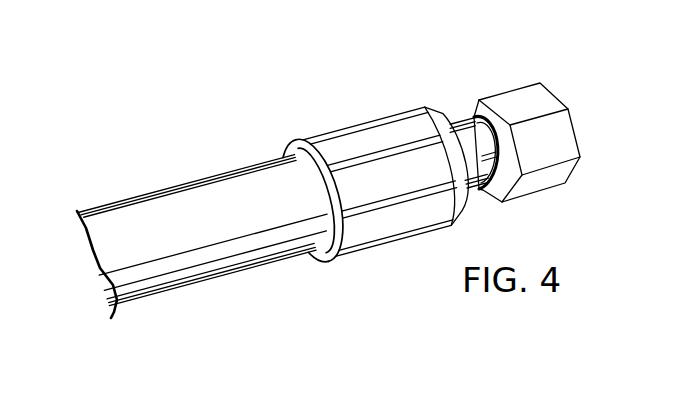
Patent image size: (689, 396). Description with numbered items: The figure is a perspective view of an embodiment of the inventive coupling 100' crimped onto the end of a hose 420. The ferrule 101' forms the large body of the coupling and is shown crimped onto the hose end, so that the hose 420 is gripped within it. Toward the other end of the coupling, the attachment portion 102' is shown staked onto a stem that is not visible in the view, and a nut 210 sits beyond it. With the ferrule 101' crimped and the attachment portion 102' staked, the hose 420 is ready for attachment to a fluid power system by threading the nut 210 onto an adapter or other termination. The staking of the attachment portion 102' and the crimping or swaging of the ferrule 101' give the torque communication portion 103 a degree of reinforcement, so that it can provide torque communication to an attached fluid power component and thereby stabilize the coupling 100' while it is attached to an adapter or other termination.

The coupling 100' is at (442, 165).
The ferrule 101' is at (371, 177).
The attachment portion 102' is at (484, 113).
The torque communication portion 103 is at (436, 106).
The nut 210 is at (544, 67).
The hose 420 is at (214, 288).